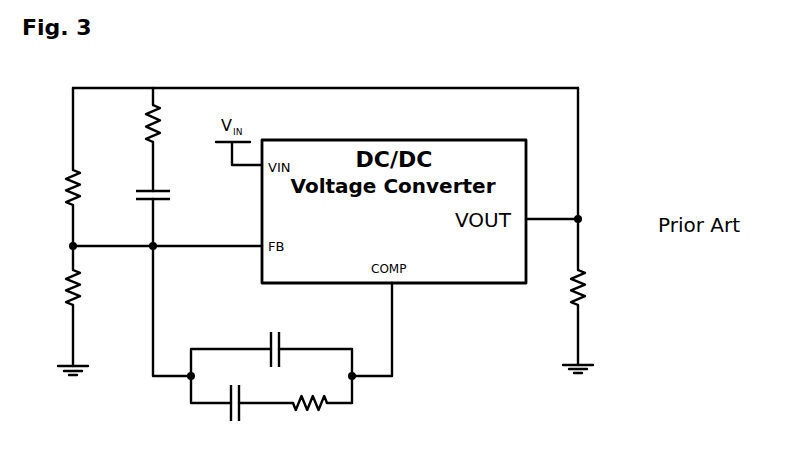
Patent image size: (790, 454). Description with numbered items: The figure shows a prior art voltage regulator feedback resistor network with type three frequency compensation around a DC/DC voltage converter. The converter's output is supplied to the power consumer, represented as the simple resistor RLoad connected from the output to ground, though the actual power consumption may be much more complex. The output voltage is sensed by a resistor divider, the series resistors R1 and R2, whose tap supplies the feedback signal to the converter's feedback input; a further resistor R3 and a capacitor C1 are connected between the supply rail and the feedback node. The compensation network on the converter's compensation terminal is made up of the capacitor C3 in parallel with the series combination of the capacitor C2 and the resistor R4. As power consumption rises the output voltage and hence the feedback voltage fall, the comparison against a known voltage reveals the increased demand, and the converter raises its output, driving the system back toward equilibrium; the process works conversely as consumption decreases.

The resistor R1 of feedback divider R1 is at (88, 187).
The resistor R2 of feedback divider R2 is at (88, 287).
The resistor R3 is at (136, 123).
The resistor R4 of compensation network R4 is at (310, 395).
The capacitor C1 is at (165, 200).
The capacitor C2 of compensation network C2 is at (239, 395).
The capacitor C3 of compensation network C3 is at (279, 341).
The load resistor RLoad is at (603, 287).